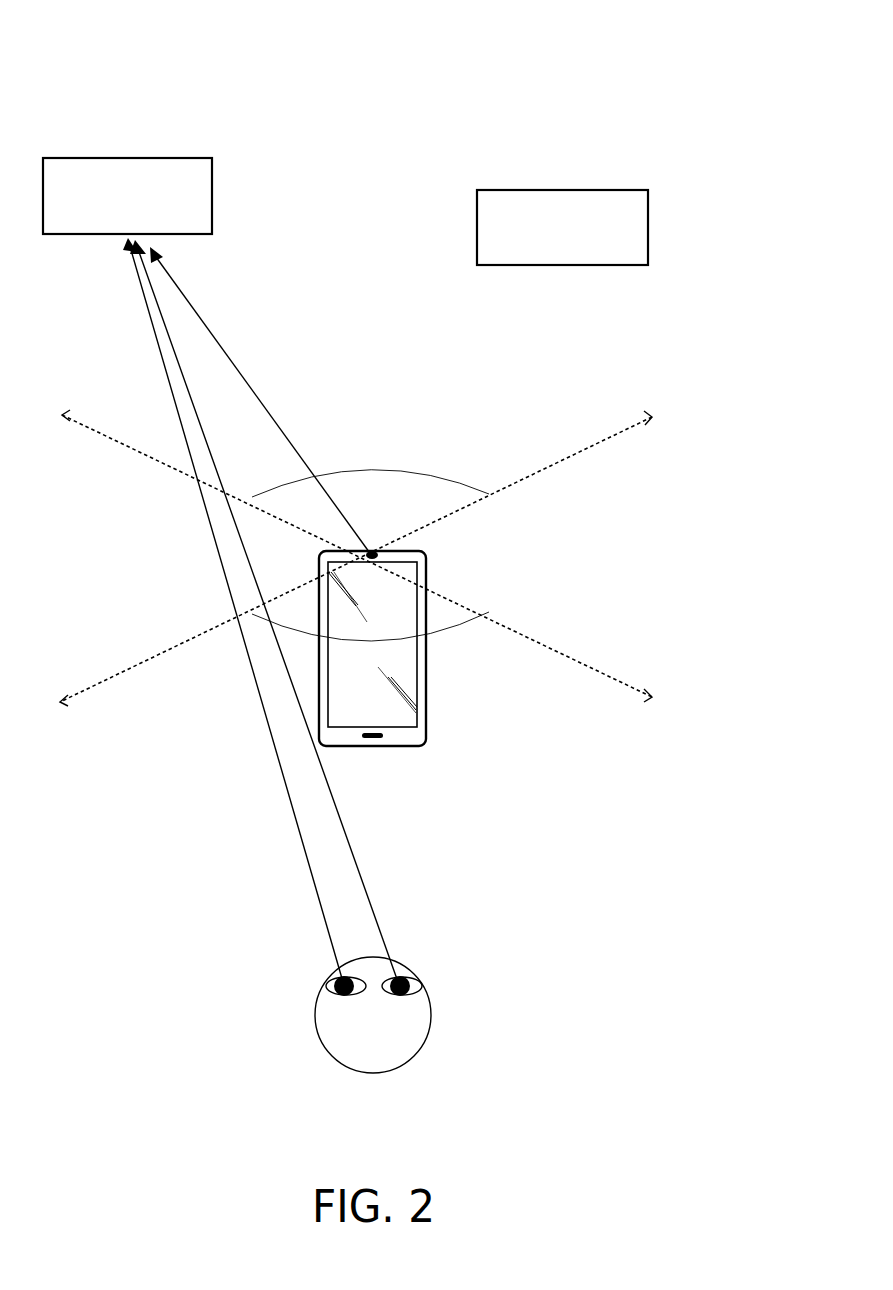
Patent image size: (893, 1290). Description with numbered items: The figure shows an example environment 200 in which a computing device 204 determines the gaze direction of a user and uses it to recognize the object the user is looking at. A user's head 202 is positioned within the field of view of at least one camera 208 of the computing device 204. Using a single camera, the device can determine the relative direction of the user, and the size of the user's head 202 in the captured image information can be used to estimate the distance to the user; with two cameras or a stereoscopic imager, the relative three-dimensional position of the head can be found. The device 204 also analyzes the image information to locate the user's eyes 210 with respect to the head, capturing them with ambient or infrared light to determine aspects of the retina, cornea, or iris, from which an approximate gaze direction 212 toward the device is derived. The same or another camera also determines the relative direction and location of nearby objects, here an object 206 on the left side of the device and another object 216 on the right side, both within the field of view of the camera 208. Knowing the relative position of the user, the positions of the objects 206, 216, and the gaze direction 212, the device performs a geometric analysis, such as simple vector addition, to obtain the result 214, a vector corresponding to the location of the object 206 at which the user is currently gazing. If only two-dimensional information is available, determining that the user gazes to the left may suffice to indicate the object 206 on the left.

The environment 200 is at (720, 108).
The user's head 202 is at (432, 996).
The computing device 204 is at (427, 718).
The object 206 is at (212, 197).
The camera 208 is at (377, 551).
The user's eyes 210 is at (303, 970).
The gaze direction 212 is at (275, 827).
The result vector 214 is at (303, 436).
The object 216 is at (648, 228).